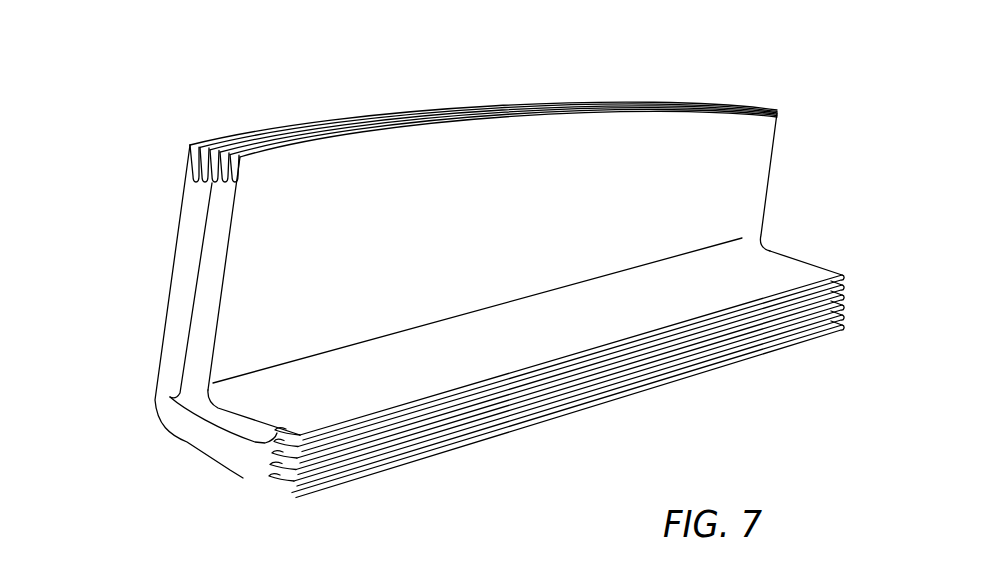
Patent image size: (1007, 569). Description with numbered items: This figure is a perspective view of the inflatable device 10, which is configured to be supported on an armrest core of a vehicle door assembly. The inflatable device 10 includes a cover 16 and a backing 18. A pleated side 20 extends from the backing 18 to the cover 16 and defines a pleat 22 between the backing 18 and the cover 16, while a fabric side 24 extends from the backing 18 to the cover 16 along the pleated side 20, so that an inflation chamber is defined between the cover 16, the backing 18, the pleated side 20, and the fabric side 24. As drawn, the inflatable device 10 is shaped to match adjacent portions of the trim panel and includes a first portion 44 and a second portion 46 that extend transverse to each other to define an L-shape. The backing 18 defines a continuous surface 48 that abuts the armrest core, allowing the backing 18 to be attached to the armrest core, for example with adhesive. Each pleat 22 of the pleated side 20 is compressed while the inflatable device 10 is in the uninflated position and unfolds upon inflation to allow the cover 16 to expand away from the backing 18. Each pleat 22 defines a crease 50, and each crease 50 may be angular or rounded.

The inflatable device 10 is at (134, 429).
The cover 16 is at (207, 457).
The backing 18 is at (562, 146).
The pleated side 20 is at (408, 90).
The pleat 22 is at (235, 163).
The fabric side 24 is at (197, 283).
The first portion 44 is at (785, 177).
The second portion 46 is at (804, 250).
The continuous surface 48 is at (480, 158).
The crease 50 is at (235, 182).